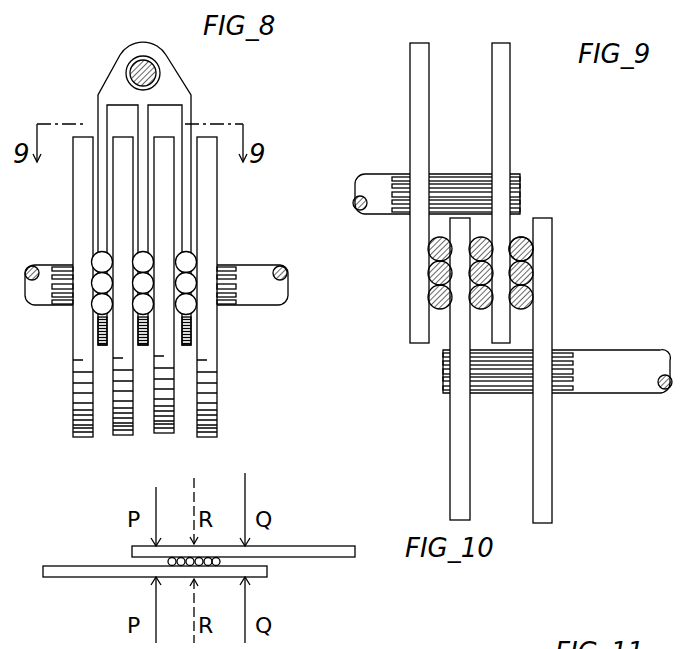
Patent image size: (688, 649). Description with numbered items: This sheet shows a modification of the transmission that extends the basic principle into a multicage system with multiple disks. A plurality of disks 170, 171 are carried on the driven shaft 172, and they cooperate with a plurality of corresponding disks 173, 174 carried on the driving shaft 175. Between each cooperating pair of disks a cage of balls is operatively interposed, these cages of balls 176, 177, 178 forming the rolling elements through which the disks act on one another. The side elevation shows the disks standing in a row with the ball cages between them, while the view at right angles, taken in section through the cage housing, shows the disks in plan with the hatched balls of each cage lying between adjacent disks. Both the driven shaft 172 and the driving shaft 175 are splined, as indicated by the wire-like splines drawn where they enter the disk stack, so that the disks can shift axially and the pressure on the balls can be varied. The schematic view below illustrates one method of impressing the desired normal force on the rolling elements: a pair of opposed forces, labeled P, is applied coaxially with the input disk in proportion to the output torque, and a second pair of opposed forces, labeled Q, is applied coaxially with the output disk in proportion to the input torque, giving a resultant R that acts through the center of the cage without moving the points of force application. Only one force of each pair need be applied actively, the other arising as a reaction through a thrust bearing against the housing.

In FIG. 8, the disk 170 is at (76, 198).
In FIG. 9, the disk 170 is at (410, 70).
In FIG. 8, the disk 171 is at (168, 434).
In FIG. 9, the disk 171 is at (492, 70).
In FIG. 8, the driven shaft 172 is at (47, 273).
In FIG. 9, the driven shaft 172 is at (377, 187).
In FIG. 8, the disk 173 is at (125, 435).
In FIG. 9, the disk 173 is at (462, 408).
In FIG. 8, the disk 174 is at (200, 383).
In FIG. 9, the disk 174 is at (548, 417).
In FIG. 8, the driving shaft 175 is at (277, 258).
In FIG. 9, the driving shaft 175 is at (623, 357).
In FIG. 8, the cage of balls 176 is at (103, 313).
In FIG. 8, the cage of balls 177 is at (142, 126).
In FIG. 9, the cage of balls 177 is at (482, 237).
In FIG. 8, the cage of balls 178 is at (188, 124).
In FIG. 9, the cage of balls 178 is at (523, 237).